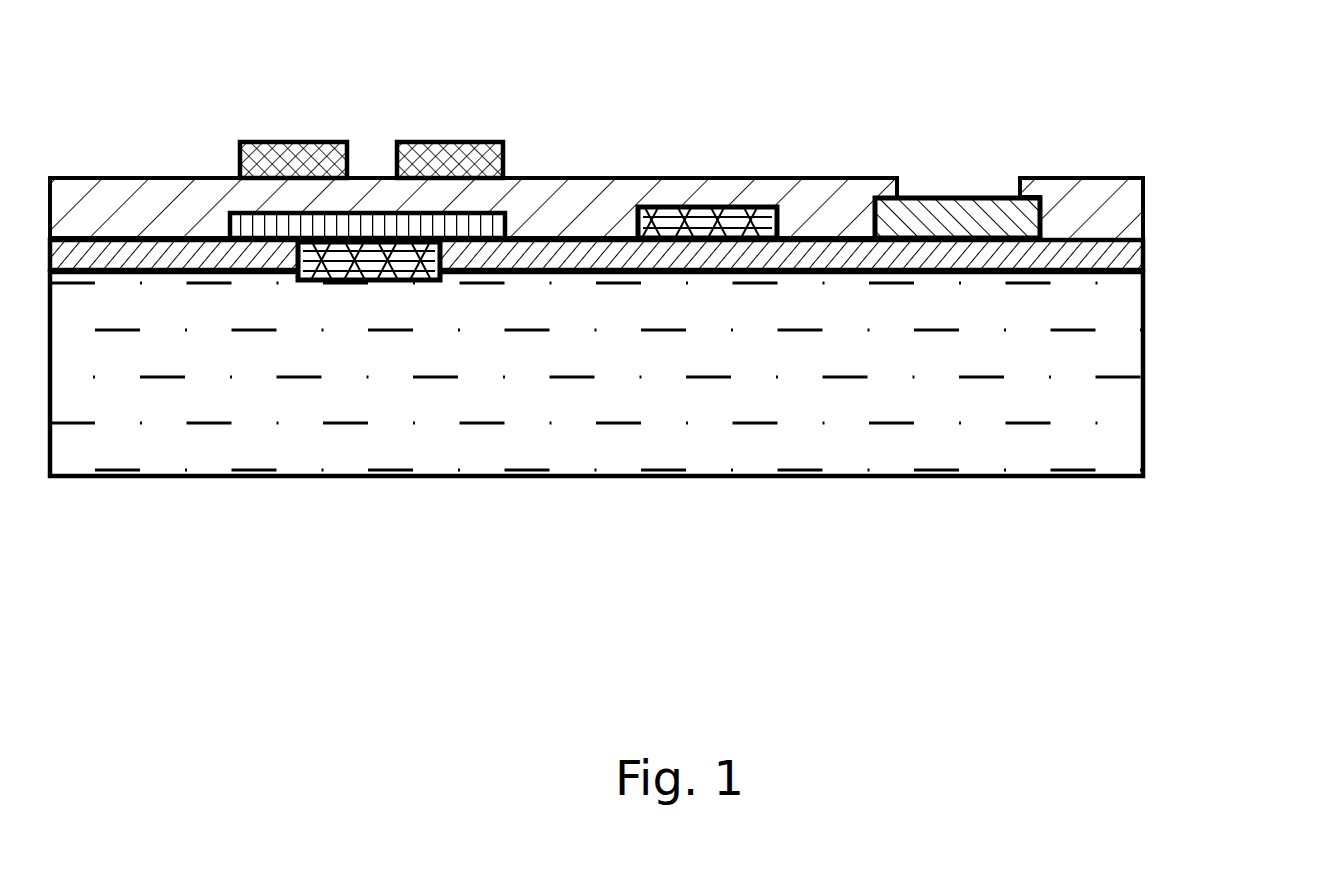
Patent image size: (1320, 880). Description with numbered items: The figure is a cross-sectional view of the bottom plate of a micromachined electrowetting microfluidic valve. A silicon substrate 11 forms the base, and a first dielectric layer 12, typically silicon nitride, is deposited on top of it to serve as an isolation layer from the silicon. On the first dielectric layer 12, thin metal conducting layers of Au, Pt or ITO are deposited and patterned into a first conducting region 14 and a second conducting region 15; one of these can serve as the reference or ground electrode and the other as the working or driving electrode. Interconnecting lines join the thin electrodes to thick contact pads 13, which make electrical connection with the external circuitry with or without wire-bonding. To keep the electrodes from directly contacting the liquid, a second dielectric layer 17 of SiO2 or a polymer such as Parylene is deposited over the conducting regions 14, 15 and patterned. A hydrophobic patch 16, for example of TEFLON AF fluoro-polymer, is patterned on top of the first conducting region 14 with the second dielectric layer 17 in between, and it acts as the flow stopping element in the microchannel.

The silicon substrate 11 is at (425, 428).
The first dielectric layer 12 is at (783, 255).
The contact pads 13 is at (360, 267).
The first conducting region 14 is at (490, 218).
The second conducting region 15 is at (937, 215).
The hydrophobic patch 16 is at (443, 152).
The second dielectric layer 17 is at (188, 212).